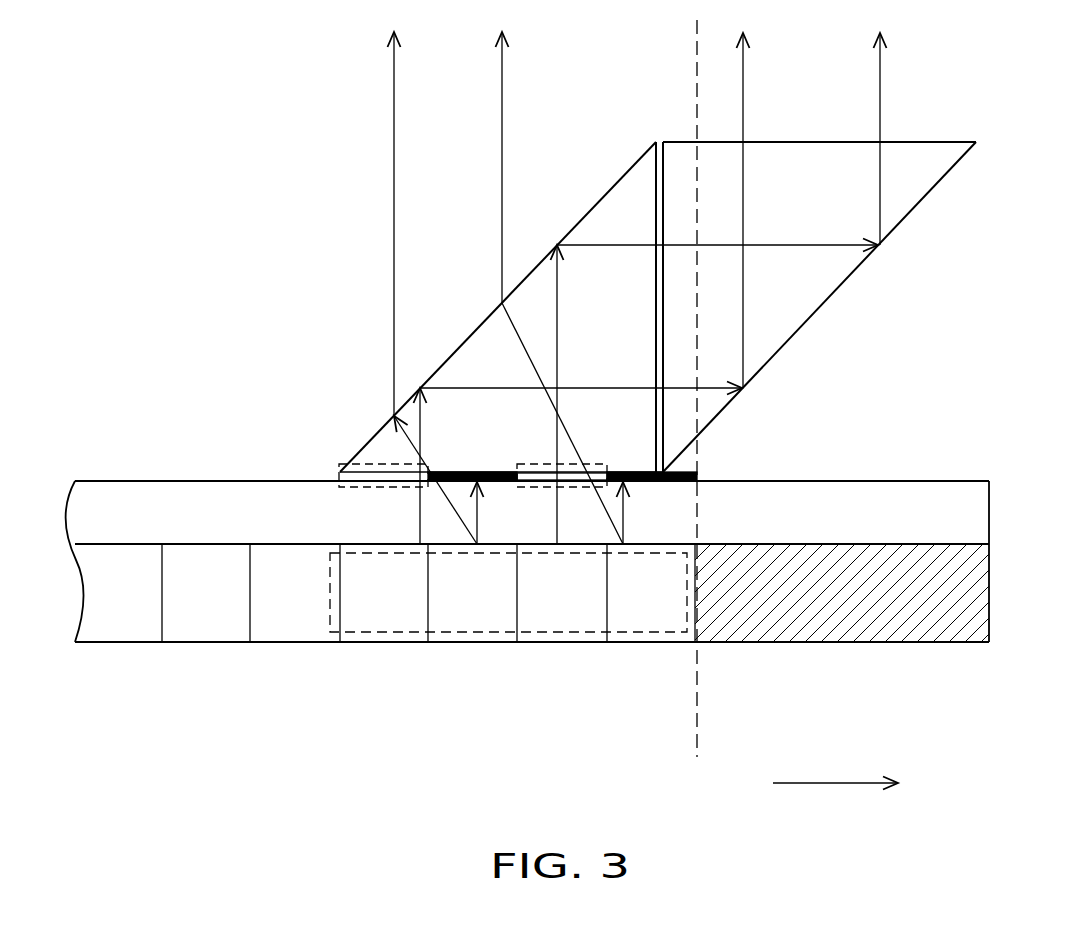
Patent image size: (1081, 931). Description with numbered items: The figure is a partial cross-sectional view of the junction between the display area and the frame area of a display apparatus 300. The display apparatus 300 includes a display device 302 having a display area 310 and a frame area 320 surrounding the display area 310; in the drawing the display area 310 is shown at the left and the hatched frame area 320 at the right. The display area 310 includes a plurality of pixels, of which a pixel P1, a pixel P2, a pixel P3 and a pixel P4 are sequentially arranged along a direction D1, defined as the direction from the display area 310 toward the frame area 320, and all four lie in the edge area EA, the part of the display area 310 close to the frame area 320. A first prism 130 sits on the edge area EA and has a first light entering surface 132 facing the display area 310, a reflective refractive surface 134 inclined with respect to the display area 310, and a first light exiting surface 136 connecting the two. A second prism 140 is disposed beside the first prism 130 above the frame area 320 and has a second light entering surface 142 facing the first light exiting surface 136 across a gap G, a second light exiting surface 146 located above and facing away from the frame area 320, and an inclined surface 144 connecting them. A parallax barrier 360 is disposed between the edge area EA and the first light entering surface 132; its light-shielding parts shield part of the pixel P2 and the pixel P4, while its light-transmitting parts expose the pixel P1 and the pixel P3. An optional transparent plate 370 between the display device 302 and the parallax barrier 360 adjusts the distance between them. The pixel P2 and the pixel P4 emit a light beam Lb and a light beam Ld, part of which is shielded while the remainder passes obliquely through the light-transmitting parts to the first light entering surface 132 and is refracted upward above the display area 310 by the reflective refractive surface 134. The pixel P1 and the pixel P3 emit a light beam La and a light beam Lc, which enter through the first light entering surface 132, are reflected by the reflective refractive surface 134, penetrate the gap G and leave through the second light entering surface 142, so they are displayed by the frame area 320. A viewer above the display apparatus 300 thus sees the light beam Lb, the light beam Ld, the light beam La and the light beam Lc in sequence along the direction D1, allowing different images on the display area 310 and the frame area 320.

The first prism 130 is at (498, 265).
The first light entering surface 132 is at (532, 470).
The reflective refractive surface 134 is at (568, 227).
The first light exiting surface 136 is at (655, 195).
The second prism 140 is at (860, 268).
The second light entering surface 142 is at (665, 275).
The inclined surface 144 is at (947, 175).
The second light exiting surface 146 is at (950, 140).
The gap G is at (660, 412).
The display apparatus 300 is at (965, 725).
The display device 302 is at (572, 613).
The display area 310 is at (132, 642).
The frame area 320 is at (842, 643).
The parallax barrier 360 is at (330, 432).
The transparent plate 370 is at (975, 517).
The edge area EA is at (330, 617).
The pixel P1 is at (387, 602).
The pixel P2 is at (490, 602).
The pixel P3 is at (575, 602).
The pixel P4 is at (652, 602).
The light beam La is at (744, 115).
The light beam Lb is at (393, 123).
The light beam Lc is at (881, 115).
The light beam Ld is at (501, 123).
The direction D1 is at (835, 800).